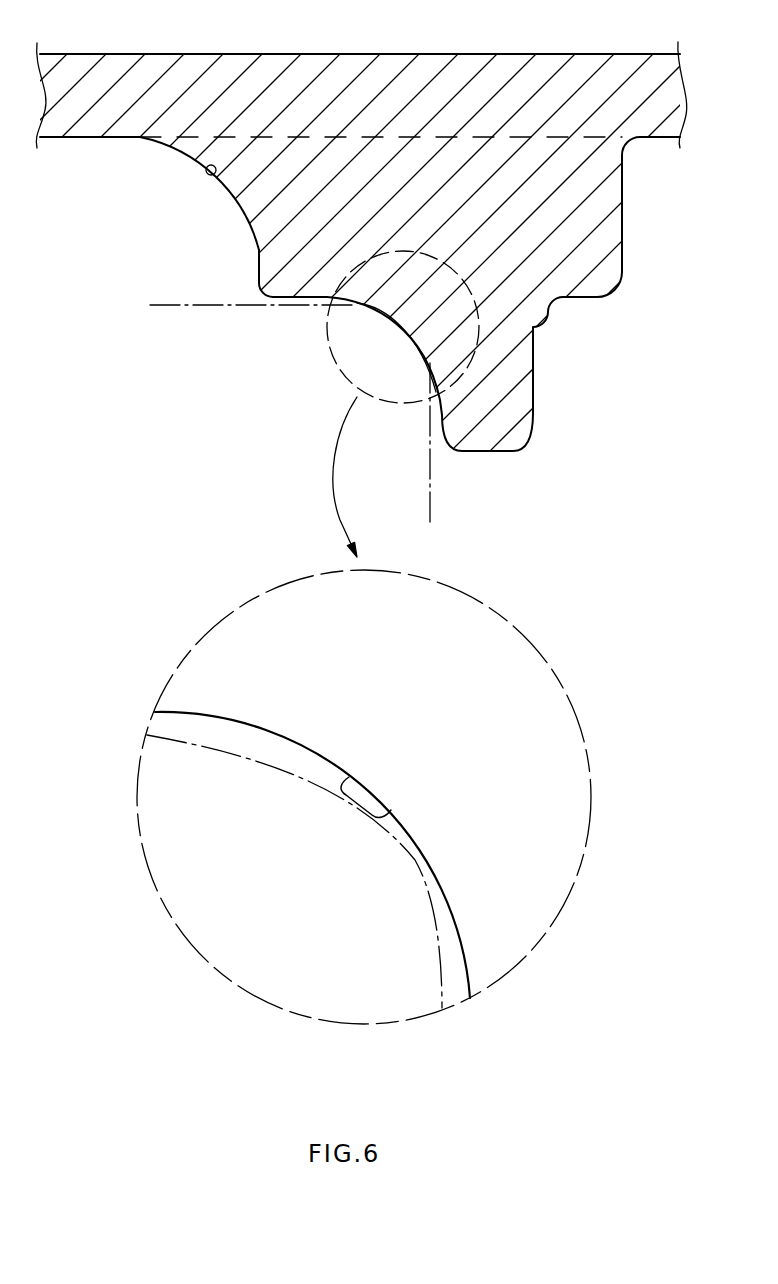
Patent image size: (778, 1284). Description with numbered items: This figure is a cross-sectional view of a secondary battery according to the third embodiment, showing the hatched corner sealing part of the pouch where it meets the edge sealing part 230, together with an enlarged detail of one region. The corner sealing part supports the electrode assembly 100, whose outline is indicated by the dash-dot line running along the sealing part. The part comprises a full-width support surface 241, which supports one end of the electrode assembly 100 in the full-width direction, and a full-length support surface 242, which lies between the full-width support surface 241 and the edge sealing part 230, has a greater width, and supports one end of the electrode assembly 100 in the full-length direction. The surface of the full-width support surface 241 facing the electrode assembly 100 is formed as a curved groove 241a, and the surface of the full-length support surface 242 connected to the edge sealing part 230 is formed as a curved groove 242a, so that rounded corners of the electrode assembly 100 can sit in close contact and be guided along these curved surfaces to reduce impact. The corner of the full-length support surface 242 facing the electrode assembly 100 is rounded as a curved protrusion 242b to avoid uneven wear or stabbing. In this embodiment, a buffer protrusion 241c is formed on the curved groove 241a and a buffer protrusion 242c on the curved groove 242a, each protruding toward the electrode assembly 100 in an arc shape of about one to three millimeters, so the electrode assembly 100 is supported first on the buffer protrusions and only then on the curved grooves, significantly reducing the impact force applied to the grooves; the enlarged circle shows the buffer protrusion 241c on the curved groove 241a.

The edge sealing part 230 is at (590, 72).
The full-width support surface 241 is at (603, 215).
The full-length support surface 242 is at (522, 363).
The curved groove 242a is at (177, 152).
The curved protrusion 242b is at (267, 298).
The buffer protrusion 242c is at (217, 178).
The curved groove 241a is at (357, 306).
The buffer protrusion 241c is at (403, 325).
The electrode assembly 100 is at (430, 488).